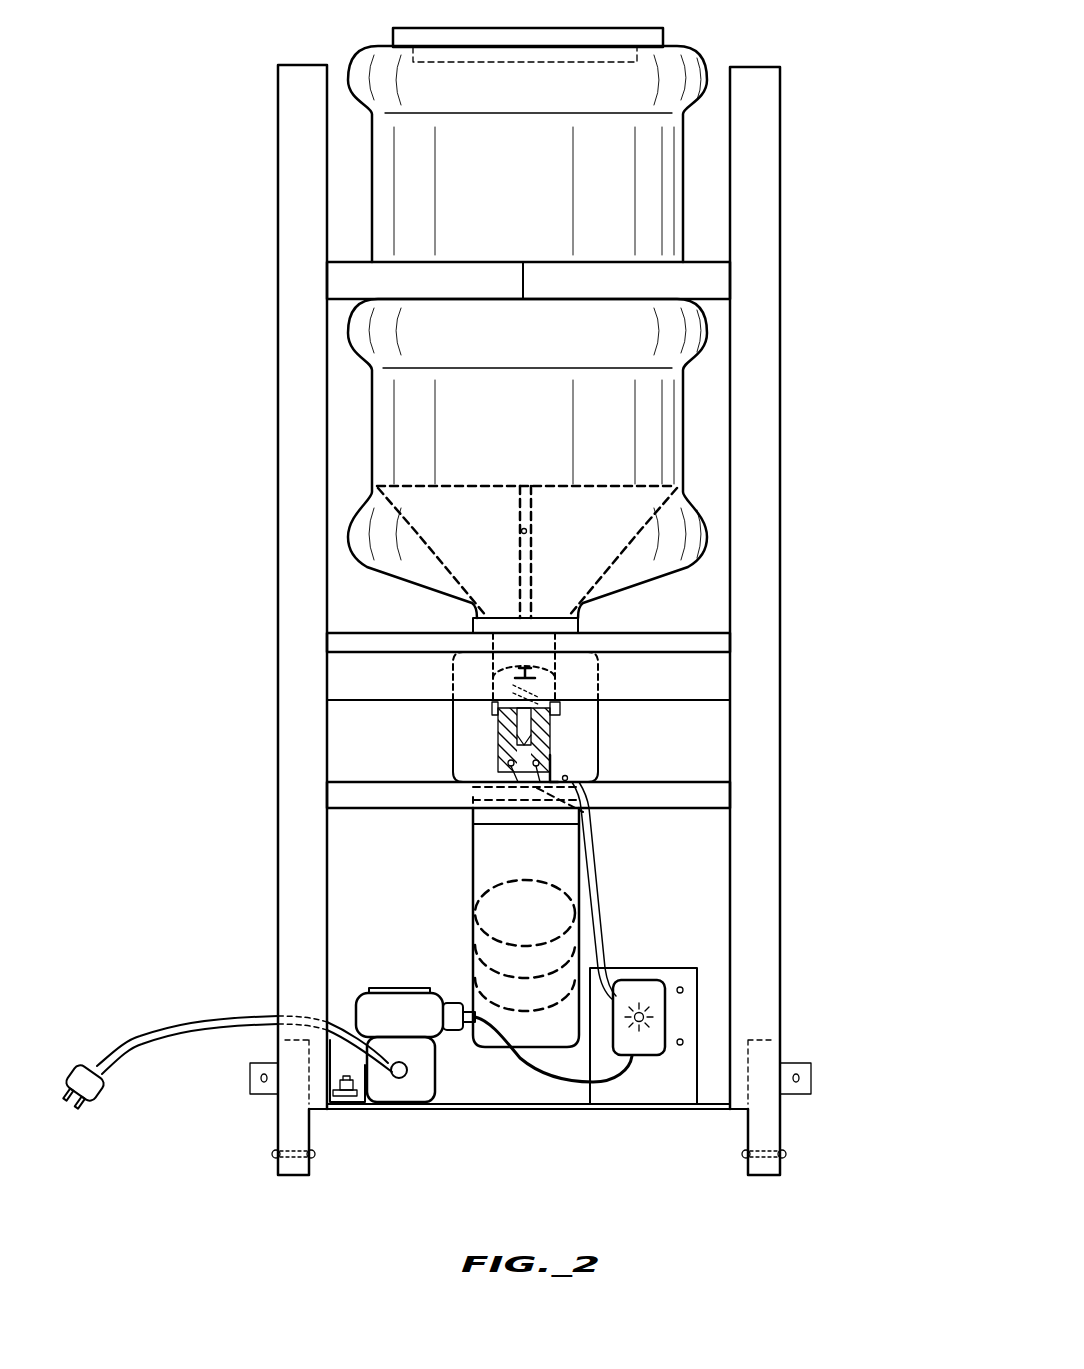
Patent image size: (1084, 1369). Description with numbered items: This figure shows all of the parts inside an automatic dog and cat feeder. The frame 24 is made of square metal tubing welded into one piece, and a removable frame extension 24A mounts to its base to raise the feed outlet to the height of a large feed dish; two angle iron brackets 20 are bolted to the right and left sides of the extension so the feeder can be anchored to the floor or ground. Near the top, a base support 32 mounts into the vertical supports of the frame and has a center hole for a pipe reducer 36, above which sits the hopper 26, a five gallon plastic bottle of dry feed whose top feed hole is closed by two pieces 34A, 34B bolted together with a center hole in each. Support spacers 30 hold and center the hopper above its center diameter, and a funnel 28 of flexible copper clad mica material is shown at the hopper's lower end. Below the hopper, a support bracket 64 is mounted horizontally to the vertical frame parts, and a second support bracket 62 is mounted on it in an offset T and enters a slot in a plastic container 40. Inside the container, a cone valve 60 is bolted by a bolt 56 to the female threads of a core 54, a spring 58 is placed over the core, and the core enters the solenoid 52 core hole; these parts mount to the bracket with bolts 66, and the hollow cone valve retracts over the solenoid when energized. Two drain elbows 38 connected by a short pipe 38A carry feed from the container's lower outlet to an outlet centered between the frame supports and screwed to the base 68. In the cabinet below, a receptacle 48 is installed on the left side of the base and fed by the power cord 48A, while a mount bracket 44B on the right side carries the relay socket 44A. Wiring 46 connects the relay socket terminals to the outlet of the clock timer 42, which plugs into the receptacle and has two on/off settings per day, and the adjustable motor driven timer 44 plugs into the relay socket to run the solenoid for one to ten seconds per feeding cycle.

The angle iron bracket 20 is at (270, 1092).
The frame 24 is at (299, 65).
The frame extension 24A is at (295, 1170).
The hopper 26 is at (611, 134).
The funnel 28 is at (483, 583).
The support spacers 30 is at (702, 259).
The base support 32 is at (701, 633).
The feed hole cover piece 34A is at (633, 34).
The feed hole cover piece 34B is at (653, 42).
The pipe reducer 36 is at (573, 671).
The drain elbow 38 is at (577, 927).
The short pipe 38A is at (546, 927).
The plastic container 40 is at (463, 751).
The timer 42 is at (372, 1013).
The timer 44 is at (745, 1018).
The relay socket 44A is at (639, 1017).
The mount bracket 44B is at (639, 1017).
The wiring 46 is at (563, 1082).
The receptacle 48 is at (392, 1088).
The power cord 48A is at (183, 1037).
The solenoid 52 is at (546, 740).
The core 54 is at (722, 686).
The bolt 56 is at (526, 686).
The spring 58 is at (526, 686).
The cone valve 60 is at (526, 686).
The support bracket 62 is at (526, 686).
The support bracket 64 is at (431, 799).
The bolts 66 is at (526, 686).
The base 68 is at (713, 1104).